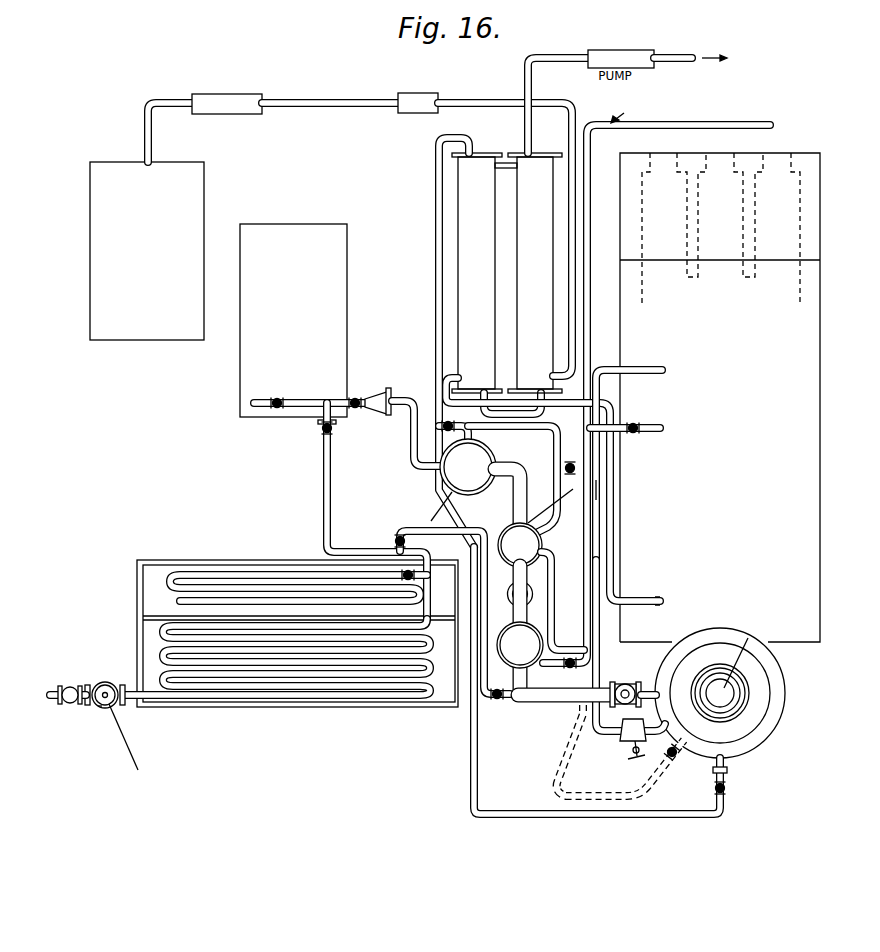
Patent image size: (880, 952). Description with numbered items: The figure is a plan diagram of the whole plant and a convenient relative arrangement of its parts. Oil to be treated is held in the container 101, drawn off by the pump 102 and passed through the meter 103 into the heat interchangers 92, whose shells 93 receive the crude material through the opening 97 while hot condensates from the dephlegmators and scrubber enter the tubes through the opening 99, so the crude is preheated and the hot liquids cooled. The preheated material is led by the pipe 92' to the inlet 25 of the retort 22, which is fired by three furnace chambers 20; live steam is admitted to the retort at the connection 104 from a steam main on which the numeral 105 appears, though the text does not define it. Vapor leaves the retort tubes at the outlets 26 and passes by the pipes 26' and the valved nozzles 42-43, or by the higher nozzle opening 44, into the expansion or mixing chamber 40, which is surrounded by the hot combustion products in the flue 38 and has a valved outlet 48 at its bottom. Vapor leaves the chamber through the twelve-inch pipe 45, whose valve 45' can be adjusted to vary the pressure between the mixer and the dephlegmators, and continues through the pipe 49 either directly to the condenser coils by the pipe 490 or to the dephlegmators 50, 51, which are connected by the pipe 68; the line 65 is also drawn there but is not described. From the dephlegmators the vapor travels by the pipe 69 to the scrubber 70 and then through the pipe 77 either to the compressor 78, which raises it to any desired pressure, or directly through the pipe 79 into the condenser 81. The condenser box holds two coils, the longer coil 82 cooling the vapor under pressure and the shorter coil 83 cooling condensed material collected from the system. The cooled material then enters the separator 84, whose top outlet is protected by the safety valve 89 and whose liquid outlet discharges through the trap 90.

The container 101 is at (147, 251).
The pump 102 is at (218, 99).
The meter 103 is at (416, 109).
The steam main 105 is at (752, 127).
The opening 99 is at (471, 147).
The heat interchanger 92 is at (496, 283).
The shell 93 is at (535, 273).
The opening 97 is at (567, 316).
The compressor 78 is at (315, 324).
The pipe 77 is at (406, 457).
The pipe 79 is at (322, 473).
The scrubber 70 is at (414, 475).
The pipe 69 is at (513, 506).
The dephlegmator 51 is at (523, 533).
The pipe from dephlegmator 65 is at (547, 633).
The pipe 68 is at (513, 613).
The dephlegmator 50 is at (536, 656).
The condenser 81 is at (165, 562).
The coil 83 is at (289, 586).
The coil 82 is at (288, 657).
The trap 90 is at (67, 686).
The separator 84 is at (104, 707).
The safety valve 89 is at (110, 703).
The pipe 490 is at (476, 693).
The pipe 49 is at (568, 703).
The valve 45' is at (623, 678).
The pipe 45 is at (652, 672).
The nozzle opening 44 is at (677, 745).
The nozzles 42-43 is at (648, 752).
The expansion or mixing chamber 40 is at (697, 742).
The valved outlet 48 is at (727, 767).
The flue 38 is at (741, 693).
The inlet 25 is at (638, 598).
The outlets 26 is at (629, 449).
The pipes 26' is at (626, 474).
The pipe 92' is at (553, 489).
The steam connection 104 is at (650, 425).
The retort 22 is at (720, 397).
The furnace chambers 20 is at (650, 237).